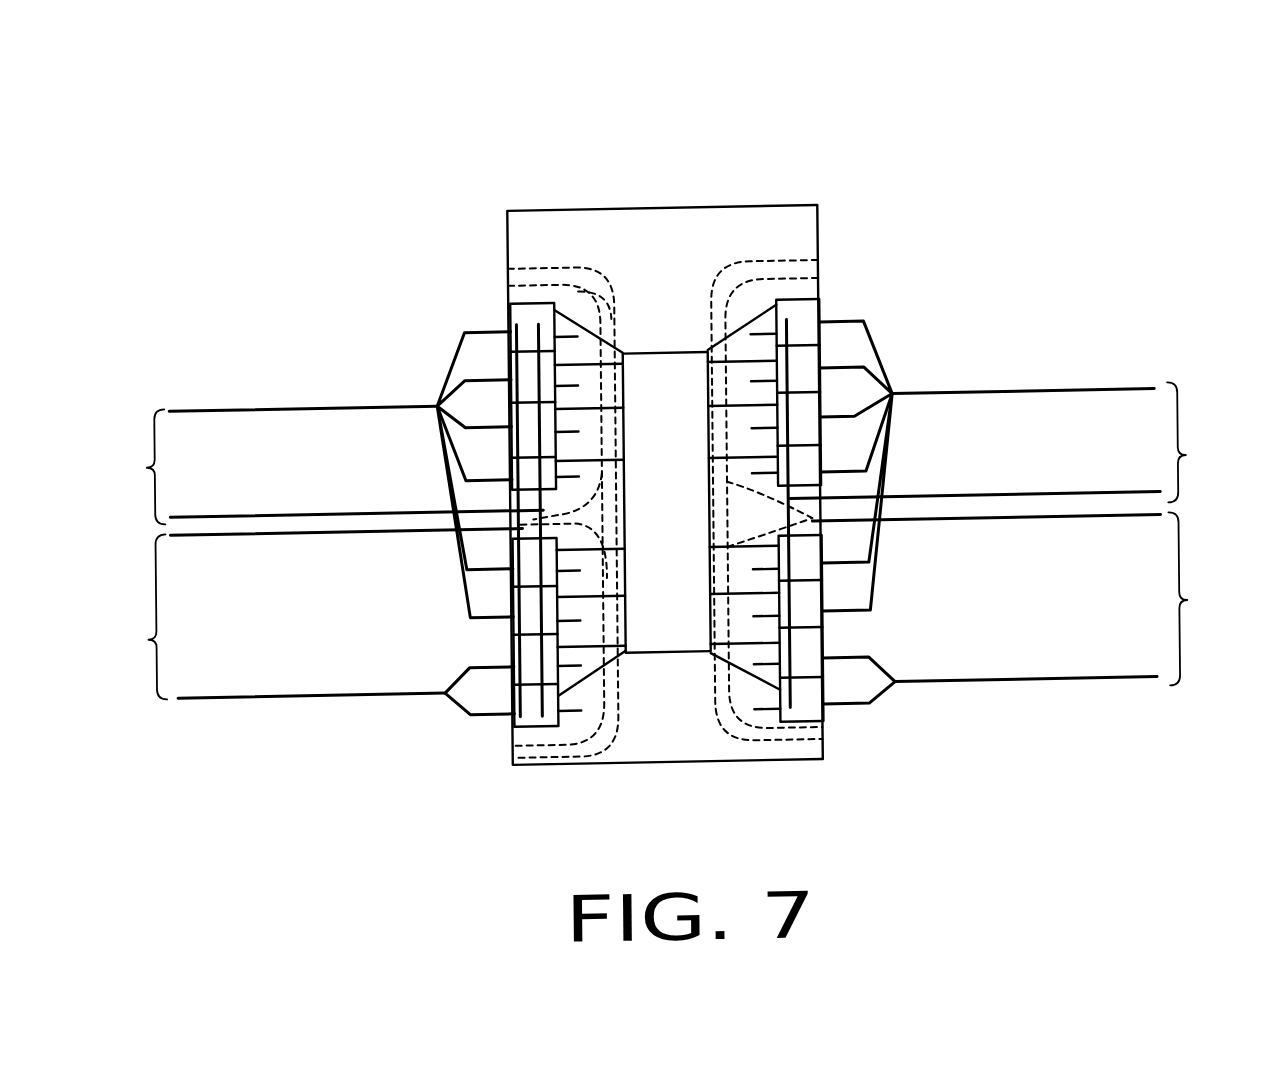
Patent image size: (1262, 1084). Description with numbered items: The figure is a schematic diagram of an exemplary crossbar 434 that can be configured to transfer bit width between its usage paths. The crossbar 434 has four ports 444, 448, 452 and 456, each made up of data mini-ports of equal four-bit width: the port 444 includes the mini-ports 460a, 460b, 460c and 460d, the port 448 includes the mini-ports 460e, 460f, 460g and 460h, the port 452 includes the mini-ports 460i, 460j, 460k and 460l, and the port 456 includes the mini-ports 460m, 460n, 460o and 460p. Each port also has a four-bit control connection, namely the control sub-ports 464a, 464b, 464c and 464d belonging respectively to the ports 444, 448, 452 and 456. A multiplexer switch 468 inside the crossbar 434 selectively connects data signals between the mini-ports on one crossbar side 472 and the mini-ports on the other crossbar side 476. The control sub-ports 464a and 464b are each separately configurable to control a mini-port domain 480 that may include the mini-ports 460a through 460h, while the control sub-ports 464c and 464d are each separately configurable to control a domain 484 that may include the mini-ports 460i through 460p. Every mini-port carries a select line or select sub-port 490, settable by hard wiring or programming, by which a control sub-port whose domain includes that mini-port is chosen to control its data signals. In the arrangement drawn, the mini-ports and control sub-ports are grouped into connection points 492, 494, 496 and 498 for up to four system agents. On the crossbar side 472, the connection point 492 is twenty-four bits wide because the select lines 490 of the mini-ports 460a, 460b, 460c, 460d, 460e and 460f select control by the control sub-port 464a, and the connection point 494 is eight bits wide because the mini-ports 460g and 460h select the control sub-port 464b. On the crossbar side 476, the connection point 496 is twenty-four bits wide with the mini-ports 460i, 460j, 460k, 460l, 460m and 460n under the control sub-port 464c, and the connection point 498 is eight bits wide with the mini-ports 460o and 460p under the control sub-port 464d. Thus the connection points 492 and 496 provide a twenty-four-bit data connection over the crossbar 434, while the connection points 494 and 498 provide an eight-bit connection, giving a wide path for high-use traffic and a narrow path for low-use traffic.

The crossbar 434 is at (729, 179).
The port 444 is at (556, 281).
The port 448 is at (608, 699).
The port 452 is at (790, 283).
The port 456 is at (737, 720).
The mini-port 460a is at (512, 314).
The mini-port 460b is at (512, 362).
The mini-port 460c is at (512, 410).
The mini-port 460d is at (512, 460).
The mini-port 460e is at (511, 559).
The mini-port 460f is at (511, 624).
The mini-port 460g is at (511, 651).
The mini-port 460h is at (512, 717).
The mini-port 460i is at (821, 319).
The mini-port 460j is at (821, 362).
The mini-port 460k is at (821, 436).
The mini-port 460l is at (821, 462).
The mini-port 460m is at (821, 576).
The mini-port 460n is at (821, 597).
The mini-port 460o is at (821, 647).
The mini-port 460p is at (821, 715).
The control sub-port 464a is at (388, 485).
The control sub-port 464b is at (376, 534).
The control sub-port 464c is at (947, 499).
The control sub-port 464d is at (942, 529).
The multiplexer switch 468 is at (652, 522).
The crossbar side 472 is at (510, 259).
The crossbar side 476 is at (821, 273).
The mini-port domain 480 is at (618, 303).
The domain 484 is at (759, 264).
The select sub-port 490 is at (569, 335).
The connection point 492 is at (304, 478).
The connection point 494 is at (305, 625).
The connection point 496 is at (1032, 462).
The connection point 498 is at (1033, 607).